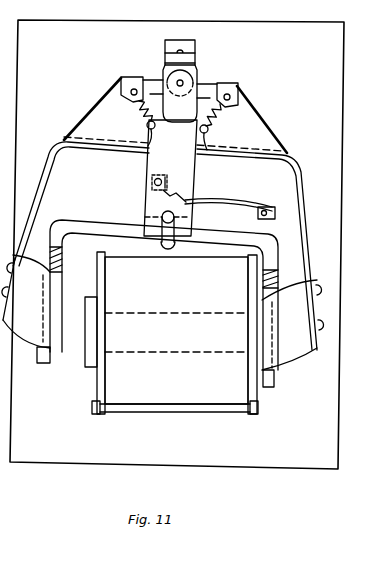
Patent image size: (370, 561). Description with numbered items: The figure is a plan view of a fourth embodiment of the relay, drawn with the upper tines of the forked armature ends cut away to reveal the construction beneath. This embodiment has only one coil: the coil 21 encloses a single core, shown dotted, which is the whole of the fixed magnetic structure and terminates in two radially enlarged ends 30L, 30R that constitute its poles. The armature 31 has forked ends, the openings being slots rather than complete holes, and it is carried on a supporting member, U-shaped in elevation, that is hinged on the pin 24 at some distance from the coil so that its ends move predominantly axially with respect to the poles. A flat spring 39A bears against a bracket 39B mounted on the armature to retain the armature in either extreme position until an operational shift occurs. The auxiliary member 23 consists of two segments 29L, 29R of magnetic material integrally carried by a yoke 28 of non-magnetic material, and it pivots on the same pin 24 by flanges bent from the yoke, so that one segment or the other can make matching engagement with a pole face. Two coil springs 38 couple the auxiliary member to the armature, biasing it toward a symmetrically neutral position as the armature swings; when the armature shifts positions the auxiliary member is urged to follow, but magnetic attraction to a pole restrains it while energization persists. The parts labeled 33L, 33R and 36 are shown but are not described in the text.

The pin 24 is at (184, 80).
The coil springs 38 is at (126, 107).
The auxiliary member 23 is at (64, 149).
The yoke 28 is at (246, 155).
The mounting plate 36 is at (183, 169).
The bracket 39B is at (185, 192).
The flat spring 39A is at (223, 200).
The armature 31 is at (126, 222).
The coil 21 is at (190, 294).
The left segment 29L is at (43, 314).
The right segment 29R is at (308, 336).
The left stop 33L is at (52, 357).
The right stop 33R is at (275, 380).
The left radially enlarged core end 30L is at (90, 410).
The right radially enlarged core end 30R is at (258, 392).